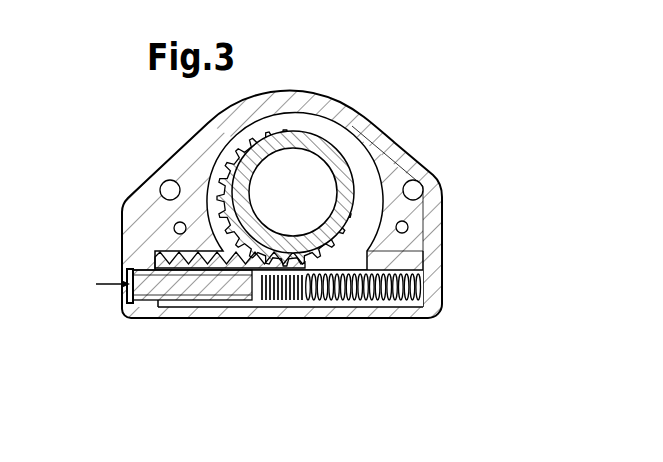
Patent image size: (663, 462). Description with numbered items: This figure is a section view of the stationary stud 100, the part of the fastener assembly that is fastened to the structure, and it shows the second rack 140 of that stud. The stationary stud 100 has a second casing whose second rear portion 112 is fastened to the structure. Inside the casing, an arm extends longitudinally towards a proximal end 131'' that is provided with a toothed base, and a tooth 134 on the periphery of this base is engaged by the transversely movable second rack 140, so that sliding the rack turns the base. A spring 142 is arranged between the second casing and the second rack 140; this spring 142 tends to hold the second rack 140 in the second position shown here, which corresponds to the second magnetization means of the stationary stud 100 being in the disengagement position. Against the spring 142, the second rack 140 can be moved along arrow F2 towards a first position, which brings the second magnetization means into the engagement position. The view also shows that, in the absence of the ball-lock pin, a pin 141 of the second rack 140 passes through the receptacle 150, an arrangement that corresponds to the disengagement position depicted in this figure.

The stationary stud 100 is at (269, 245).
The second rear portion 112 is at (414, 143).
The proximal end 131'' is at (331, 153).
The tooth 134 is at (235, 163).
The second rack 140 is at (258, 300).
The pin 141 is at (196, 290).
The spring 142 is at (400, 300).
The receptacle 150 is at (122, 303).
The arrow F2 is at (96, 287).